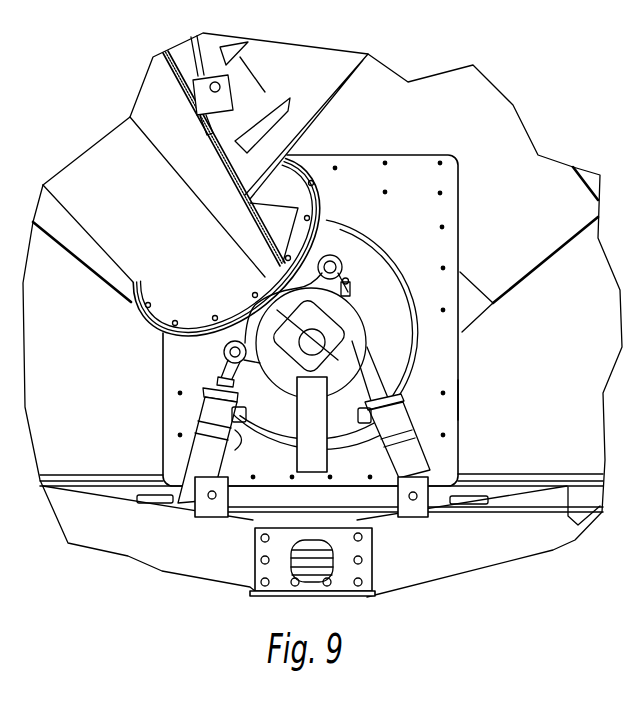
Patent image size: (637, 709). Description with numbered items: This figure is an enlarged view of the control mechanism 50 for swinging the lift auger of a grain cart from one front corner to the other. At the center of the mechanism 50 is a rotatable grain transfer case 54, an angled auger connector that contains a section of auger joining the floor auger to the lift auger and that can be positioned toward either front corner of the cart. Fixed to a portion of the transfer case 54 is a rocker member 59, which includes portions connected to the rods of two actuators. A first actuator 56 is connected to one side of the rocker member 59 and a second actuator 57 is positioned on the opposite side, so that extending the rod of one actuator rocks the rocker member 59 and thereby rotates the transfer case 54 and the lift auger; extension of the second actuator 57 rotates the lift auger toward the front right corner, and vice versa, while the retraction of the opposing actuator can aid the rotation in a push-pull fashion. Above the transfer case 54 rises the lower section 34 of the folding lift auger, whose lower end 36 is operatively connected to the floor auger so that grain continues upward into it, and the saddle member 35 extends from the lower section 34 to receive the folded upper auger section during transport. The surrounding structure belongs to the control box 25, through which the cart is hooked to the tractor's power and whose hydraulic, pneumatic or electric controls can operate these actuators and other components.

The control box 25 is at (461, 399).
The lower section 34 is at (130, 250).
The saddle member 35 is at (333, 85).
The lower end 36 is at (157, 317).
The control mechanism 50 is at (459, 215).
The grain transfer case 54 is at (388, 338).
The first actuator 56 is at (200, 453).
The second actuator 57 is at (417, 453).
The rocker member 59 is at (347, 322).